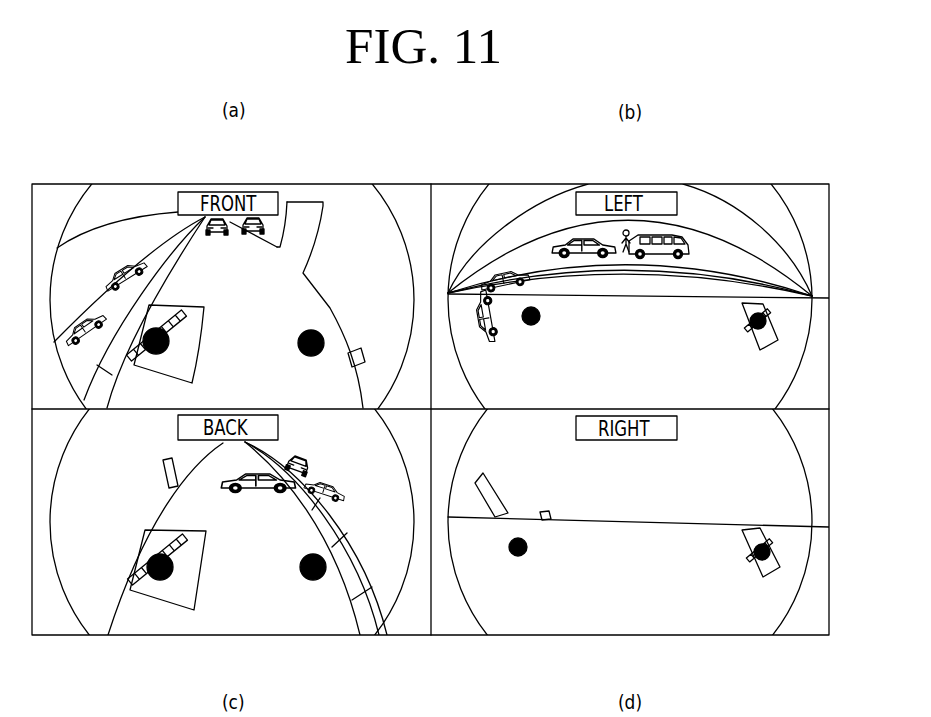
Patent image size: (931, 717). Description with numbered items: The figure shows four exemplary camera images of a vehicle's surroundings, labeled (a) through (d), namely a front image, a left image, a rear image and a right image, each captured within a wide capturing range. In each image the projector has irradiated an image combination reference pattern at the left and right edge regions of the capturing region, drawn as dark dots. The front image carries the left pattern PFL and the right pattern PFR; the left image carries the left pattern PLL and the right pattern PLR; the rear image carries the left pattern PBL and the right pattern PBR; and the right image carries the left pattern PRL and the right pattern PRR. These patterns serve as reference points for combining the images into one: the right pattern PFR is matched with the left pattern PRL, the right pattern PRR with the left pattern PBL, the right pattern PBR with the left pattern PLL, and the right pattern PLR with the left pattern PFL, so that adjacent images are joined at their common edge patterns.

The left reference pattern of the first capturing range PFL is at (148, 331).
The right reference pattern of the first capturing range PFR is at (320, 333).
The left reference pattern of the fourth capturing range PLL is at (532, 306).
The right reference pattern of the fourth capturing range PLR is at (766, 318).
The left reference pattern of the third capturing range PBL is at (160, 580).
The right reference pattern of the third capturing range PBR is at (313, 580).
The left reference pattern of the second capturing range PRL is at (518, 556).
The right reference pattern of the second capturing range PRR is at (755, 563).